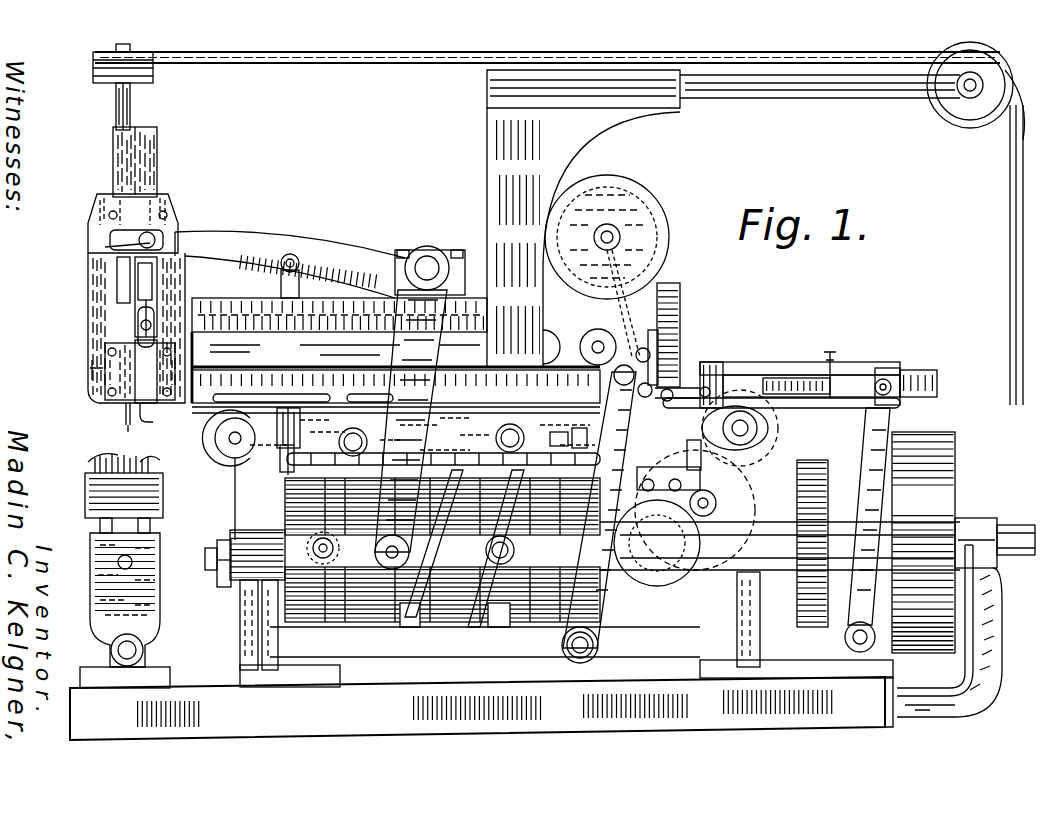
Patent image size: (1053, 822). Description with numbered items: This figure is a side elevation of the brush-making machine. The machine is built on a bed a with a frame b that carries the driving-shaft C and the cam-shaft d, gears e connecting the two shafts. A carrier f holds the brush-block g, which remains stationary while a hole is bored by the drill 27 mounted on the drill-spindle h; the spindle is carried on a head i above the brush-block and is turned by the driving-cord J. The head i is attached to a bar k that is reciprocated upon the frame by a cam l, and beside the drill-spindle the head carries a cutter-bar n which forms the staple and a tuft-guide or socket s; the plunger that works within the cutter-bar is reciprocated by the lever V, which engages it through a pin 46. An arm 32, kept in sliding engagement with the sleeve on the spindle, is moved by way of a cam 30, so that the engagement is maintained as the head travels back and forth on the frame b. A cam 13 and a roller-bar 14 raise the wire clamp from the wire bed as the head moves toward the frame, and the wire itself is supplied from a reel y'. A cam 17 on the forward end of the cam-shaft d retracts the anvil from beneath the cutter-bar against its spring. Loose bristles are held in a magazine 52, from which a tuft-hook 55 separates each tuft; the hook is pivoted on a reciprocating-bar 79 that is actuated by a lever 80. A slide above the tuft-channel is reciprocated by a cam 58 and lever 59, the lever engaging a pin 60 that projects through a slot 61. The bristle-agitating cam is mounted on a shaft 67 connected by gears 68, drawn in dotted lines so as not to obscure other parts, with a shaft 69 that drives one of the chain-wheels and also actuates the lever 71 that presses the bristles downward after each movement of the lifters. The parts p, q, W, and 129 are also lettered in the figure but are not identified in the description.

The driving-cord J is at (333, 52).
The drill-spindle h is at (116, 107).
The cutter-bar n is at (157, 158).
The head p is at (108, 205).
The pin 46 is at (105, 247).
The head i is at (100, 316).
The needle bar q is at (90, 372).
The drill 27 is at (124, 413).
The tuft-guide s is at (153, 422).
The brush-block g is at (92, 458).
The carrier f is at (90, 568).
The lever V is at (345, 236).
The arm 32 is at (267, 276).
The bar k is at (450, 238).
The lever W is at (442, 458).
The cam 30 is at (385, 543).
The cam l is at (496, 548).
The cam 58 is at (588, 514).
The lever 59 is at (612, 600).
The roller-bar 14 is at (235, 465).
The cam 13 is at (280, 487).
The cam-shaft d is at (228, 540).
The cam 17 is at (222, 553).
The frame b is at (243, 633).
The bed a is at (481, 708).
The reel y' is at (624, 237).
The slot 61 is at (557, 325).
The pin 60 is at (626, 362).
The magazine 52 is at (700, 355).
The tuft-hook 55 is at (778, 385).
The lever 71 is at (720, 390).
The reciprocating-bar 79 is at (870, 362).
The lever 80 is at (874, 432).
The shaft 69 is at (760, 430).
The gears 68 is at (737, 493).
The shaft 67 is at (687, 573).
The gears e is at (817, 627).
The drum 129 is at (923, 542).
The driving-shaft C is at (1015, 524).